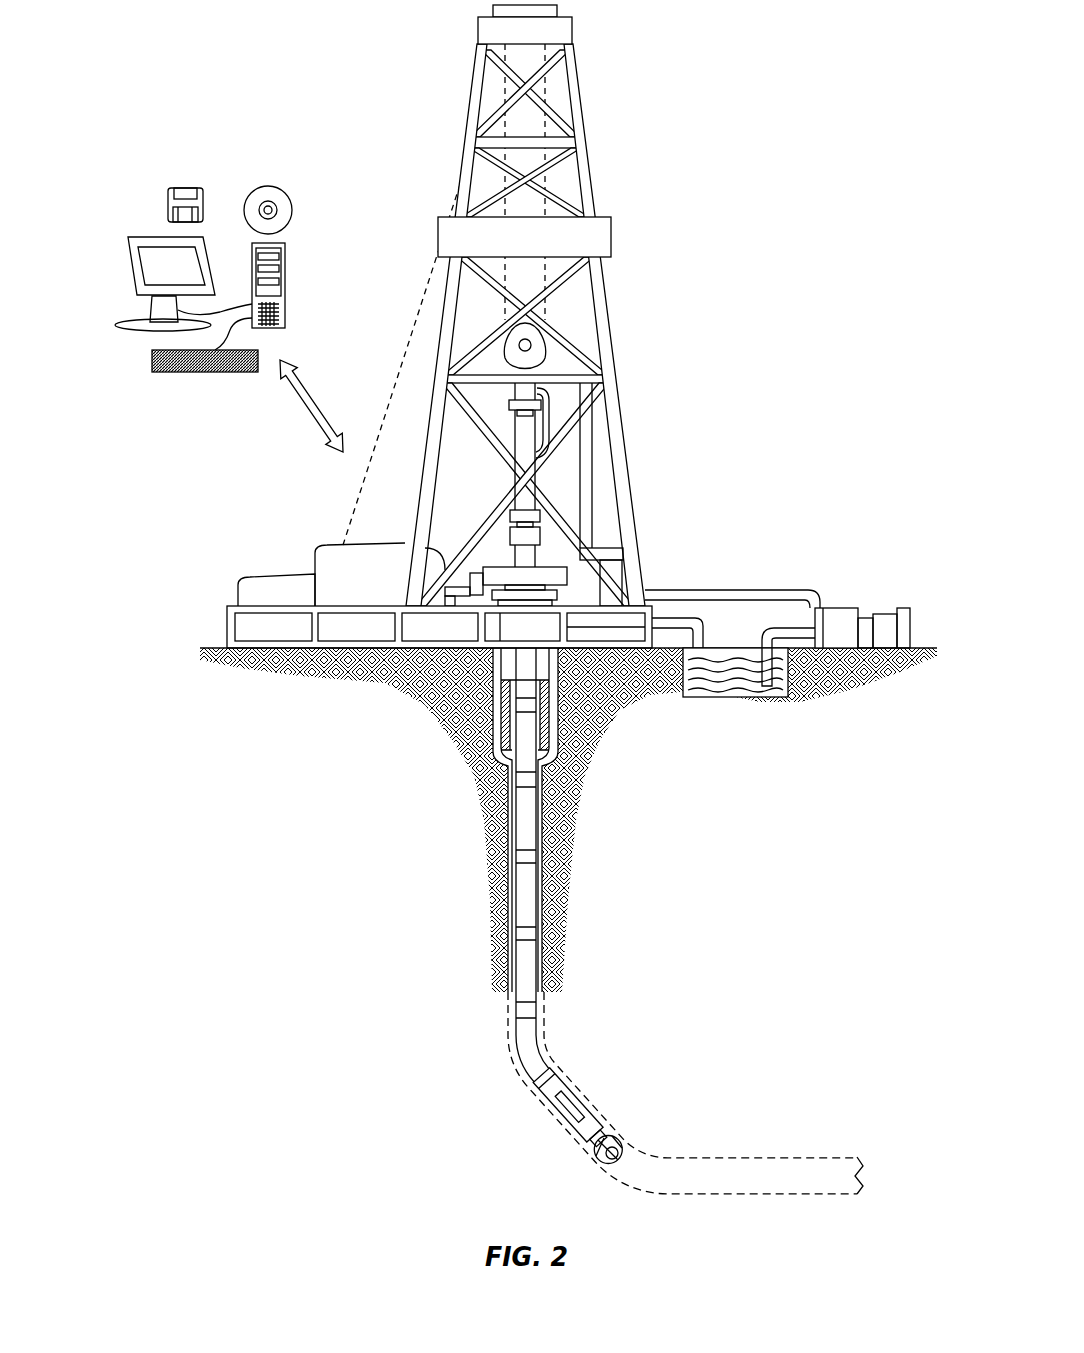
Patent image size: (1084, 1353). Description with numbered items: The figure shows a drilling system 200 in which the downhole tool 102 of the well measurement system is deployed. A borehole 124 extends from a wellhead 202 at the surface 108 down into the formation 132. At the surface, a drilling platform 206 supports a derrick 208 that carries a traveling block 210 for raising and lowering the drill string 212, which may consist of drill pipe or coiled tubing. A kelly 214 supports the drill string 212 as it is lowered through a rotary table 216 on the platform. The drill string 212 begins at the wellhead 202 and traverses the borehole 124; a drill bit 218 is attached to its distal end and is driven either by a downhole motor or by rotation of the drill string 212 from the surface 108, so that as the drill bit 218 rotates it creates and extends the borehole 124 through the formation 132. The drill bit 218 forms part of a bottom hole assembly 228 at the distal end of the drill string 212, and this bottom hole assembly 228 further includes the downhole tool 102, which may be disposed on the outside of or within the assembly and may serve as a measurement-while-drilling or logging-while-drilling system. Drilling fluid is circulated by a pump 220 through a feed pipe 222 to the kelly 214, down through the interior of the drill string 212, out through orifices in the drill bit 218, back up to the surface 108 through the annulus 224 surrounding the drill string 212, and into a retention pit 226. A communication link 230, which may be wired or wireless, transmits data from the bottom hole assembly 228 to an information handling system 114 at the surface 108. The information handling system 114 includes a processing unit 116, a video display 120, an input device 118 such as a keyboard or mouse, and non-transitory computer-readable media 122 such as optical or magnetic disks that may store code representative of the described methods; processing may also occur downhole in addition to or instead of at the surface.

The drilling system 200 is at (846, 106).
The information handling system 114 is at (130, 172).
The non-transitory computer-readable media 122 is at (266, 187).
The video display 120 is at (130, 270).
The processing unit 116 is at (290, 256).
The input device 118 is at (166, 372).
The communication link 230 is at (300, 412).
The derrick 208 is at (588, 160).
The traveling block 210 is at (547, 348).
The kelly 214 is at (527, 428).
The rotary table 216 is at (560, 574).
The wellhead 202 is at (578, 594).
The drilling platform 206 is at (227, 625).
The surface 108 is at (922, 648).
The retention pit 226 is at (735, 690).
The feed pipe 222 is at (768, 590).
The pump 220 is at (840, 608).
The annulus 224 is at (503, 856).
The borehole 124 is at (545, 856).
The formation 132 is at (772, 944).
The drill string 212 is at (540, 832).
The bottom hole assembly 228 is at (522, 1120).
The downhole tool 102 is at (572, 1110).
The drill bit 218 is at (626, 1145).